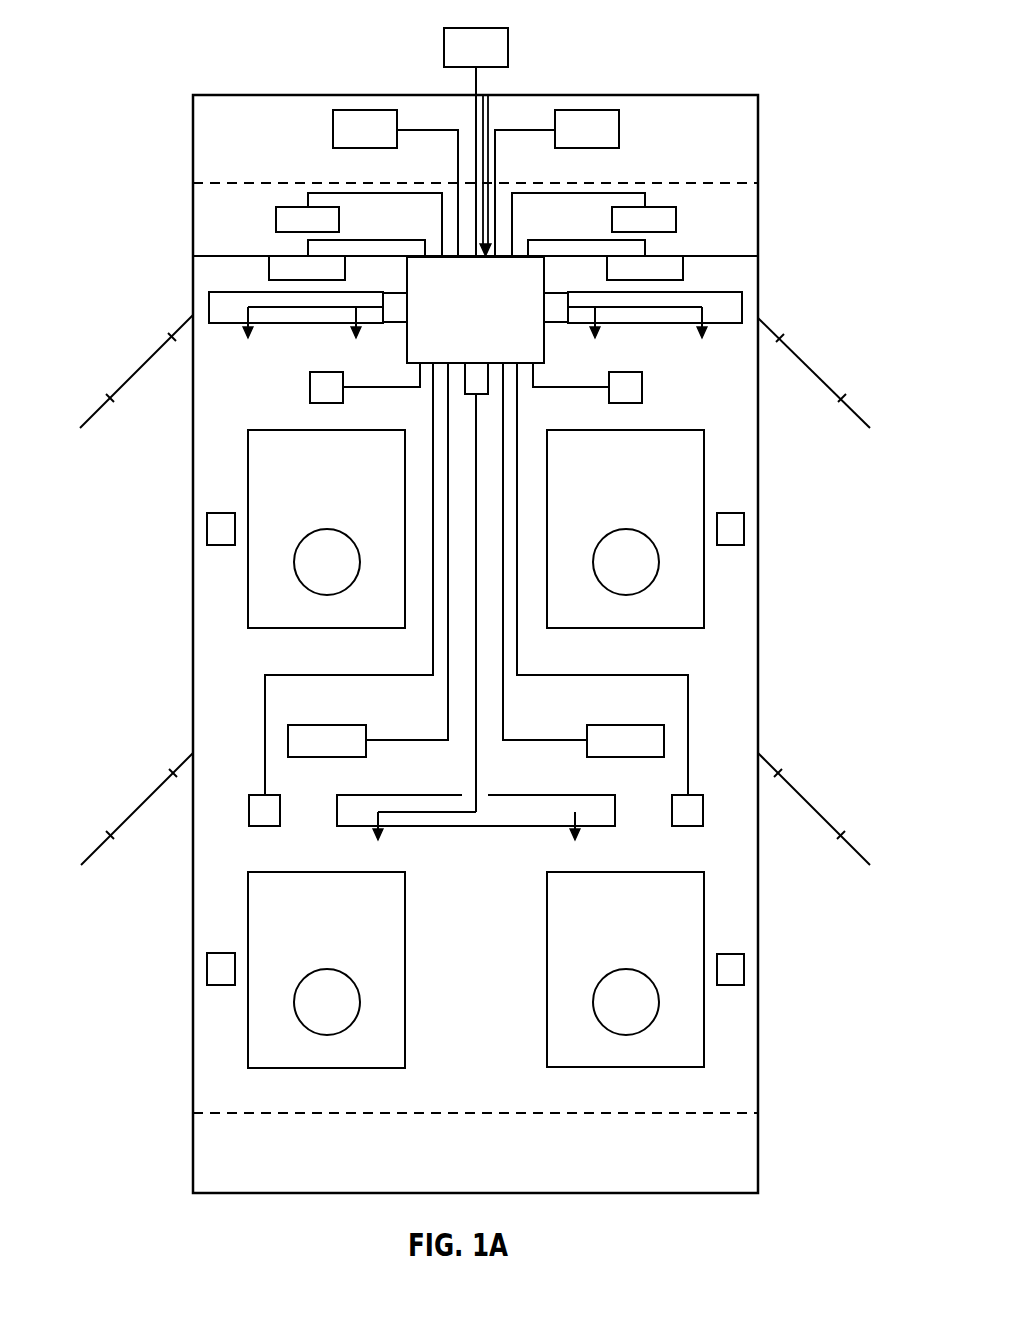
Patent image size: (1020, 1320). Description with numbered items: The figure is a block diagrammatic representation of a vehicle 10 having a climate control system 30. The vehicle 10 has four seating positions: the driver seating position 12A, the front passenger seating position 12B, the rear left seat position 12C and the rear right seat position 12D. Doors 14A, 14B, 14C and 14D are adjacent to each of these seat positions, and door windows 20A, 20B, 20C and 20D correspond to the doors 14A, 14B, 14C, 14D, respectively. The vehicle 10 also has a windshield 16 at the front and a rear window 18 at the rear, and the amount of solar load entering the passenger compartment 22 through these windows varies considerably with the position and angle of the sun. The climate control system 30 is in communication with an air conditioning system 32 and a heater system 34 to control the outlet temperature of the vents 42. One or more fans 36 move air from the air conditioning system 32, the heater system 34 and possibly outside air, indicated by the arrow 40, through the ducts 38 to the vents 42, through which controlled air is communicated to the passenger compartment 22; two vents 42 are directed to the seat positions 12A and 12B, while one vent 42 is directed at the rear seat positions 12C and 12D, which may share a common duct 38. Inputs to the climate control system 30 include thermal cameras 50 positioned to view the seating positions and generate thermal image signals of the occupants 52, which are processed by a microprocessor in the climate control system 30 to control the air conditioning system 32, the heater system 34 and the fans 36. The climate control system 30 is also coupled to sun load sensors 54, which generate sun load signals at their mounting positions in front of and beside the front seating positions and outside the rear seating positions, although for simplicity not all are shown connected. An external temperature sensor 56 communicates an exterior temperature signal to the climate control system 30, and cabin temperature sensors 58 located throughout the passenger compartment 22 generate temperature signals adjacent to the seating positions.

The vehicle 10 is at (230, 95).
The seating position 12A is at (248, 558).
The seating position 12B is at (704, 558).
The seat position 12C is at (318, 1068).
The seat position 12D is at (624, 1068).
The door 14A is at (100, 408).
The door 14B is at (853, 408).
The door 14C is at (97, 847).
The door 14D is at (853, 847).
The windshield 16 is at (277, 183).
The rear window 18 is at (385, 1115).
The door window 20A is at (143, 360).
The door window 20B is at (812, 360).
The door window 20C is at (140, 802).
The door window 20D is at (812, 802).
The passenger compartment 22 is at (269, 981).
The climate control system 30 is at (468, 255).
The air conditioning system 32 is at (367, 110).
The heater system 34 is at (587, 110).
The fan 36 is at (402, 292).
The duct 38 is at (258, 291).
The arrow 40 is at (488, 100).
The vent 42 is at (230, 323).
The thermal camera 50 is at (277, 256).
The occupant 52 is at (303, 590).
The sun load sensor 54 is at (283, 207).
The external temperature sensor 56 is at (495, 28).
The cabin temperature sensor 58 is at (325, 372).